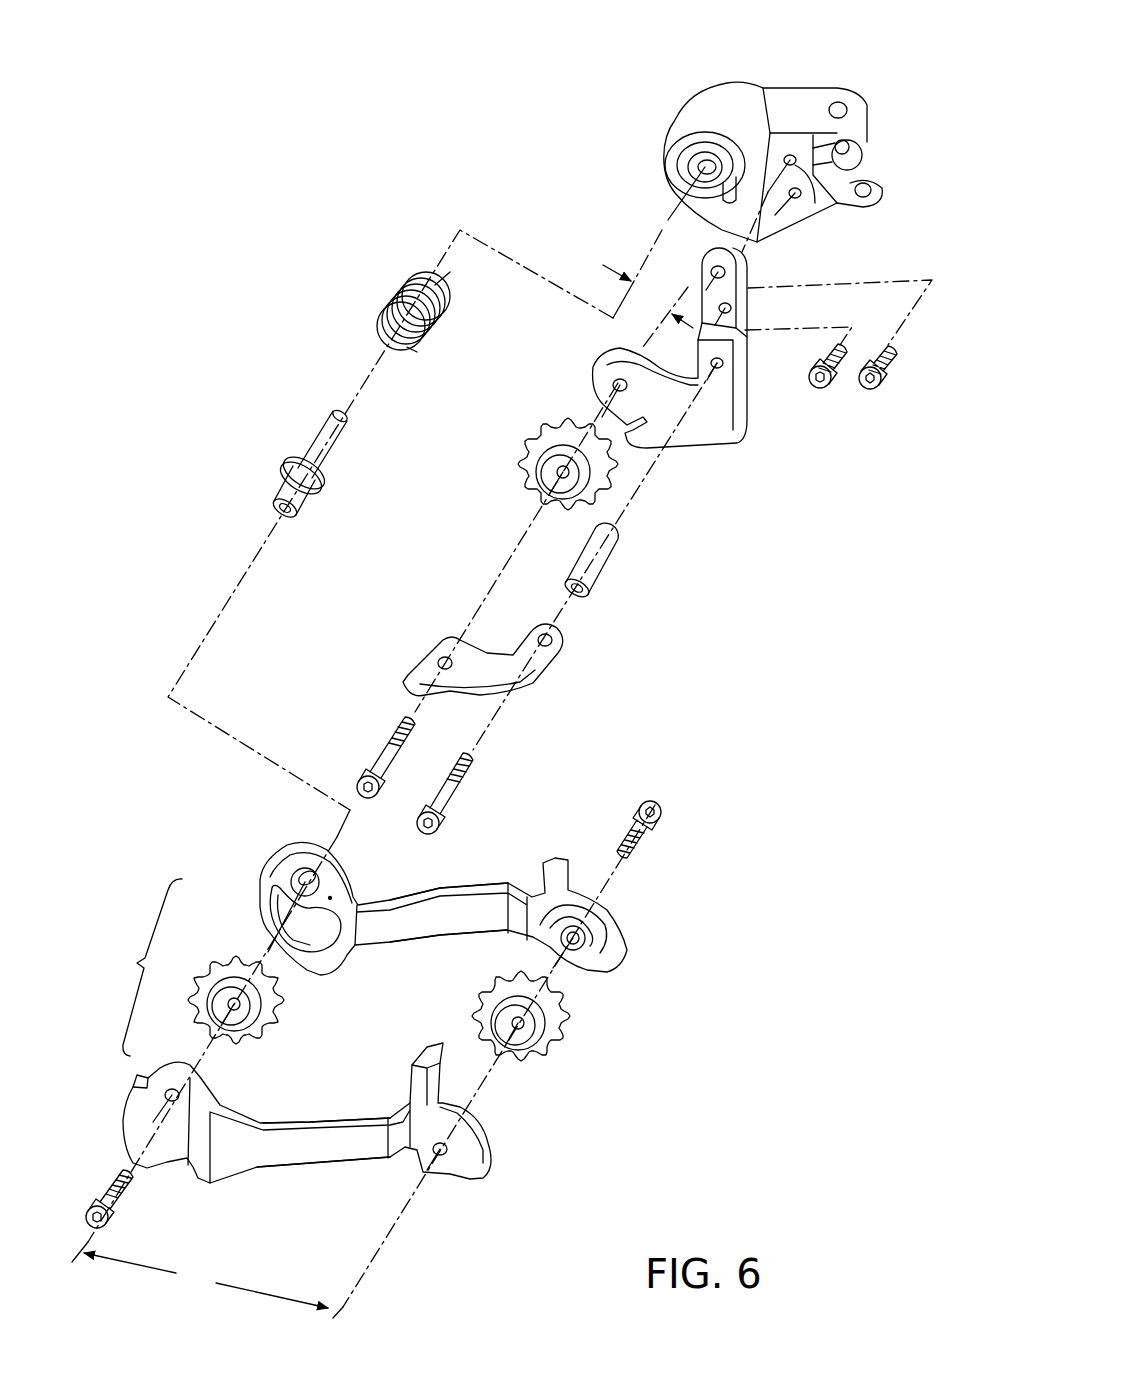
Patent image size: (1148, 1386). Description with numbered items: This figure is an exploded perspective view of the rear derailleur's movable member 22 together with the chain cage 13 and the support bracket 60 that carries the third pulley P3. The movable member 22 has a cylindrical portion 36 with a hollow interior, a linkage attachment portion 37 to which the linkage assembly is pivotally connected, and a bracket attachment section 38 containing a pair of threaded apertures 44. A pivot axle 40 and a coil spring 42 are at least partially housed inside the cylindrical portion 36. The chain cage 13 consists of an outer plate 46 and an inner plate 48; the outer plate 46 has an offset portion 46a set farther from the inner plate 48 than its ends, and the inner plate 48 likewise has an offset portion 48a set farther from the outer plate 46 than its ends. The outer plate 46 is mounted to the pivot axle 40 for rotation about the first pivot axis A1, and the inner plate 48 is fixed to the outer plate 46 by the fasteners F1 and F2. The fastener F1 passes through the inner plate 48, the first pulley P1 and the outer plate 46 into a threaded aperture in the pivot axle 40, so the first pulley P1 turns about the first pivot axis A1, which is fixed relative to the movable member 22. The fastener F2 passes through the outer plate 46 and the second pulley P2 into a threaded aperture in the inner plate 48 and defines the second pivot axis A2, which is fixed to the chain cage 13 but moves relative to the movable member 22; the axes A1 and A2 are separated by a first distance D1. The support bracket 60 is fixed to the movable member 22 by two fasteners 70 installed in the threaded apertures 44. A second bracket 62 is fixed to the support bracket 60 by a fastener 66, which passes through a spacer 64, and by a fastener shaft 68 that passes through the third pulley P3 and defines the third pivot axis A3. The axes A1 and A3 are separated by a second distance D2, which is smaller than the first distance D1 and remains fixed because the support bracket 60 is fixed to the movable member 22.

The movable member 22 is at (779, 142).
The cylindrical portion 36 is at (708, 110).
The linkage attachment portion 37 is at (853, 97).
The bracket attachment section 38 is at (807, 145).
The threaded apertures 44 is at (797, 198).
The coil spring 42 is at (393, 287).
The pivot axle 40 is at (322, 447).
The support bracket 60 is at (715, 427).
The fasteners 70 is at (865, 390).
The spacer 64 is at (597, 563).
The second bracket 62 is at (543, 657).
The fastener shaft 68 is at (393, 727).
The fastener 66 is at (467, 783).
The chain cage 13 is at (367, 1027).
The outer plate 46 is at (260, 902).
The offset portion 46a is at (437, 920).
The inner plate 48 is at (143, 1076).
The offset portion 48a is at (313, 1143).
The first pulley P1 is at (287, 1003).
The second pulley P2 is at (563, 1047).
The third pulley P3 is at (523, 442).
The first pivot axis A1 is at (662, 240).
The second pivot axis A2 is at (567, 973).
The third pivot axis A3 is at (495, 582).
The first distance D1 is at (206, 1280).
The second distance D2 is at (630, 284).
The fastener F1 is at (107, 1187).
The fastener F2 is at (633, 833).